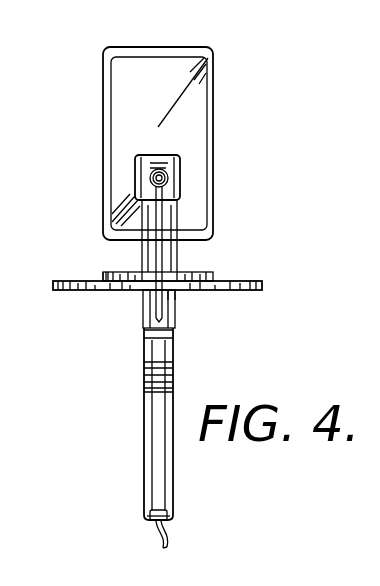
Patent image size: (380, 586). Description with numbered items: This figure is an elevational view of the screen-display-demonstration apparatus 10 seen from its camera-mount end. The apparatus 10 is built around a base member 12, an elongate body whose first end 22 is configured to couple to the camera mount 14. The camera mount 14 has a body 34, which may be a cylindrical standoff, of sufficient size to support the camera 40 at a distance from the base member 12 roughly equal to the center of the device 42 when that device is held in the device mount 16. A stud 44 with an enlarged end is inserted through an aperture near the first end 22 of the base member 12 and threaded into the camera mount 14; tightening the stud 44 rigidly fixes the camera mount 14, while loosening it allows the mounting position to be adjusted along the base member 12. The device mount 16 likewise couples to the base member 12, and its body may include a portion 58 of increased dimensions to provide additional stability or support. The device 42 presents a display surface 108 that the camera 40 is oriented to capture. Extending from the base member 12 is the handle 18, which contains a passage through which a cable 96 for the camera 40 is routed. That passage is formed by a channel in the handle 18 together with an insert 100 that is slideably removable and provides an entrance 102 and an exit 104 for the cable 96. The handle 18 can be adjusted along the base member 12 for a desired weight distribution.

The screen-display-demonstration apparatus 10 is at (88, 349).
The base member 12 is at (240, 280).
The camera mount 14 is at (203, 229).
The device mount 16 is at (112, 273).
The handle 18 is at (173, 487).
The first end 22 is at (180, 290).
The body 34 is at (177, 258).
The camera 40 is at (157, 157).
The device 42 is at (213, 48).
The stud 44 is at (143, 296).
The portion of increased dimensions 58 is at (102, 278).
The cable 96 is at (147, 213).
The insert 100 is at (153, 423).
The entrance 102 is at (170, 332).
The exit 104 is at (150, 527).
The display surface 108 is at (172, 91).